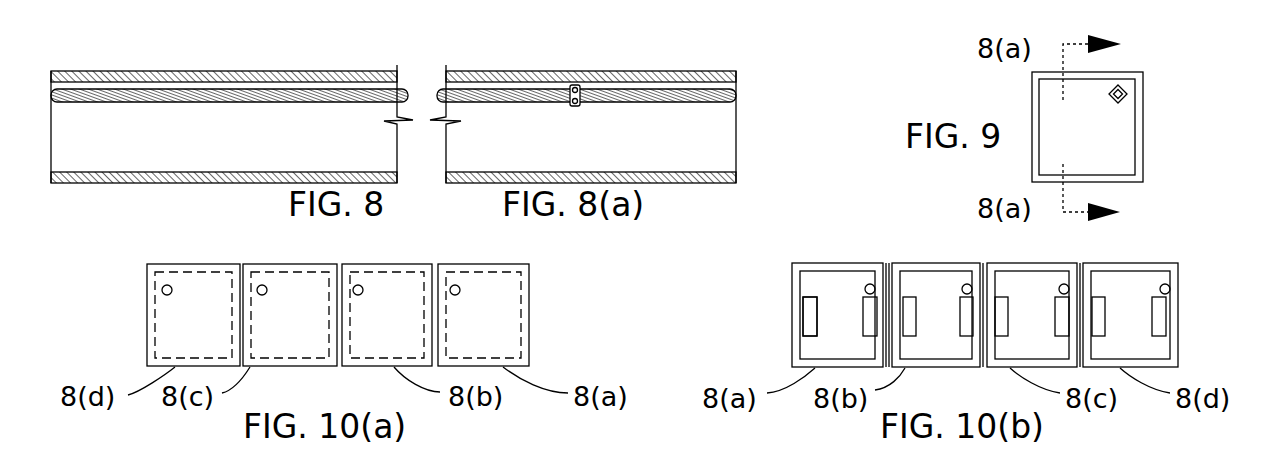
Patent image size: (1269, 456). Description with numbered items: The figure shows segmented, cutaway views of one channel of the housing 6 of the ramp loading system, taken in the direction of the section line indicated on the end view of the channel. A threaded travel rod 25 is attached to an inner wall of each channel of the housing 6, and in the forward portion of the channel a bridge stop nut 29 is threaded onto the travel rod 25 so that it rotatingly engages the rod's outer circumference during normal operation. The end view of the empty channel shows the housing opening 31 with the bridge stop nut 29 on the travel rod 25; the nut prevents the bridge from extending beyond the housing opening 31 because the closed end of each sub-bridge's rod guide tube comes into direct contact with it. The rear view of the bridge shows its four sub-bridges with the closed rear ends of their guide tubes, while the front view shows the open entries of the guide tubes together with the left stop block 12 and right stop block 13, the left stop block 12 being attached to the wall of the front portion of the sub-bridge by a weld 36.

In FIG. 8, the housing 6 is at (328, 62).
In FIG. 8, the travel rod 25 is at (103, 92).
The travel rod 25 is at (675, 88).
In FIG. 9, the travel rod 25 is at (1133, 93).
The bridge stop nut 29 is at (573, 72).
In FIG. 9, the bridge stop nut 29 is at (1125, 102).
The housing opening 31 is at (737, 128).
The weld 36 is at (800, 317).
The right stop block 13 is at (862, 313).
The left stop block 12 is at (805, 337).